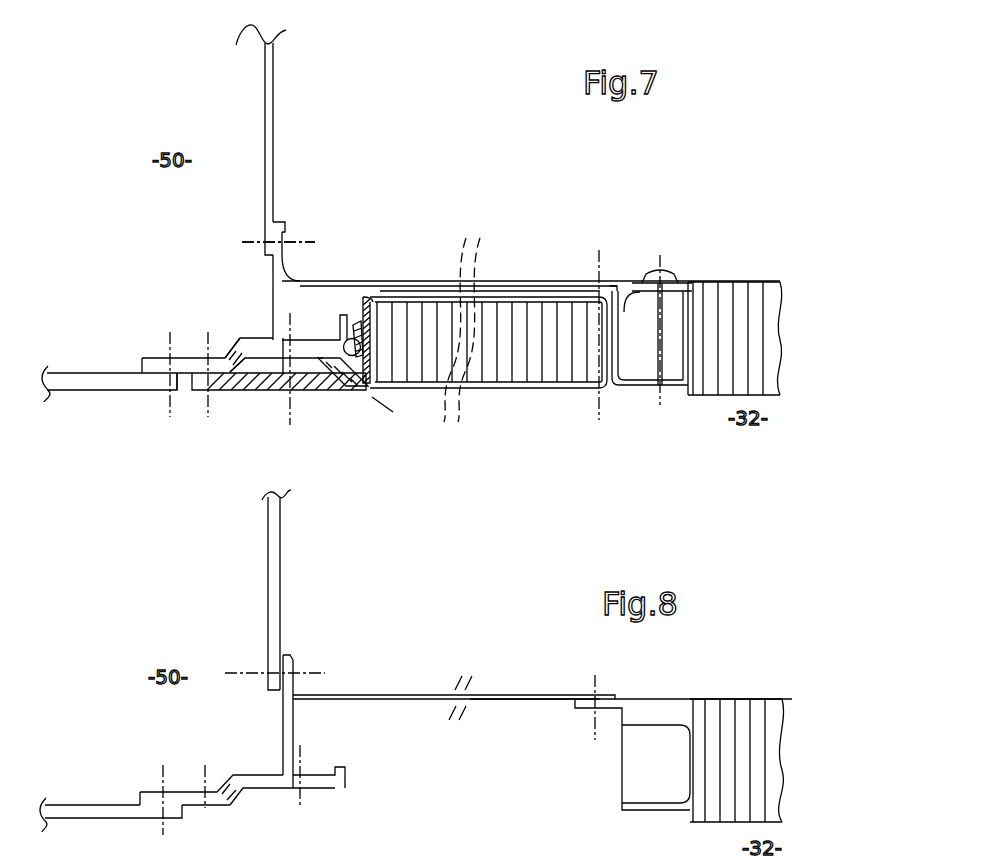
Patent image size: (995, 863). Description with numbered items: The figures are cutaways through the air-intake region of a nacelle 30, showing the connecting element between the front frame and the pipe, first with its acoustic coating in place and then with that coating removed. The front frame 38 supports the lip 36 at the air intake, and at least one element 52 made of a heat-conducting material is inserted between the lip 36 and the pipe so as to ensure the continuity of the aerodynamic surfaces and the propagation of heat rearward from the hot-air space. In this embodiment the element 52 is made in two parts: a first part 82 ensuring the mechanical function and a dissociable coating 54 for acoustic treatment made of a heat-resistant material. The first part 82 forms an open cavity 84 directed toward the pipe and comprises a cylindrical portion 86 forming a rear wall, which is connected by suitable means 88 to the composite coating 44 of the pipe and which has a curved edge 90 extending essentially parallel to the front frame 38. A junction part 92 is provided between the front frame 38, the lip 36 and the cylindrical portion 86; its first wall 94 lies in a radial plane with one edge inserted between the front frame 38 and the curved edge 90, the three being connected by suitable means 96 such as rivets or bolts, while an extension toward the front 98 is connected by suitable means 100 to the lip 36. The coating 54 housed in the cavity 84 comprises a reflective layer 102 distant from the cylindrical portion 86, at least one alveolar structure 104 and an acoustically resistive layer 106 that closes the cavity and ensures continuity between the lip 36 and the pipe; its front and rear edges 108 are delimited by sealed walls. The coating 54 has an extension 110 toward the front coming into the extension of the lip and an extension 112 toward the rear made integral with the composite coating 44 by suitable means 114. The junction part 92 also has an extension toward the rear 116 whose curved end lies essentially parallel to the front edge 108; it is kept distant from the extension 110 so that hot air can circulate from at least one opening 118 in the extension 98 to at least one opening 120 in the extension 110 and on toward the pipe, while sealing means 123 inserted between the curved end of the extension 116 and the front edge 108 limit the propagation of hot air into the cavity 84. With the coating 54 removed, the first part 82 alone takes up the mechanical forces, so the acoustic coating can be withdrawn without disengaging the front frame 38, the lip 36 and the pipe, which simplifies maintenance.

In FIG. 7, the nacelle 30 is at (609, 488).
In FIG. 7, the lip 36 is at (90, 392).
In FIG. 8, the lip 36 is at (80, 808).
In FIG. 7, the front frame 38 is at (273, 100).
In FIG. 8, the front frame 38 is at (282, 548).
In FIG. 7, the coating for acoustic treatment 44 is at (744, 302).
In FIG. 8, the coating for acoustic treatment 44 is at (742, 740).
In FIG. 7, the element made of heat-conducting material 52 is at (418, 196).
In FIG. 7, the coating for acoustic treatment 54 is at (500, 315).
In FIG. 8, the coating for acoustic treatment 54 is at (412, 692).
In FIG. 7, the first part 82 is at (398, 280).
In FIG. 8, the first part 82 is at (370, 696).
In FIG. 7, the cavity 84 is at (342, 297).
In FIG. 7, the cylindrical portion 86 is at (497, 300).
In FIG. 8, the cylindrical portion 86 is at (505, 697).
In FIG. 7, the connecting means 88 is at (604, 248).
In FIG. 8, the connecting means 88 is at (594, 698).
In FIG. 7, the curved edge 90 is at (287, 222).
In FIG. 8, the curved edge 90 is at (291, 655).
In FIG. 7, the junction part 92 is at (266, 333).
In FIG. 8, the junction part 92 is at (265, 738).
In FIG. 7, the first wall 94 is at (283, 304).
In FIG. 8, the first wall 94 is at (286, 724).
In FIG. 7, the connecting means 96 is at (250, 232).
In FIG. 8, the connecting means 96 is at (250, 672).
In FIG. 7, the extension toward the front 98 is at (182, 356).
In FIG. 8, the extension toward the front 98 is at (190, 792).
In FIG. 7, the connecting means 100 is at (168, 336).
In FIG. 8, the connecting means 100 is at (160, 790).
In FIG. 7, the reflective layer 102 is at (403, 297).
In FIG. 7, the alveolar structure 104 is at (423, 367).
In FIG. 7, the acoustically resistive layer 106 is at (495, 392).
In FIG. 7, the edge 108 is at (365, 297).
In FIG. 7, the extension toward the front 110 is at (267, 390).
In FIG. 7, the extension toward the rear 112 is at (613, 388).
In FIG. 7, the connecting means 114 is at (687, 282).
In FIG. 7, the extension toward the rear 116 is at (297, 352).
In FIG. 8, the extension toward the rear 116 is at (288, 798).
In FIG. 7, the opening 118 is at (228, 345).
In FIG. 7, the opening 120 is at (323, 388).
In FIG. 7, the sealing means 123 is at (366, 390).